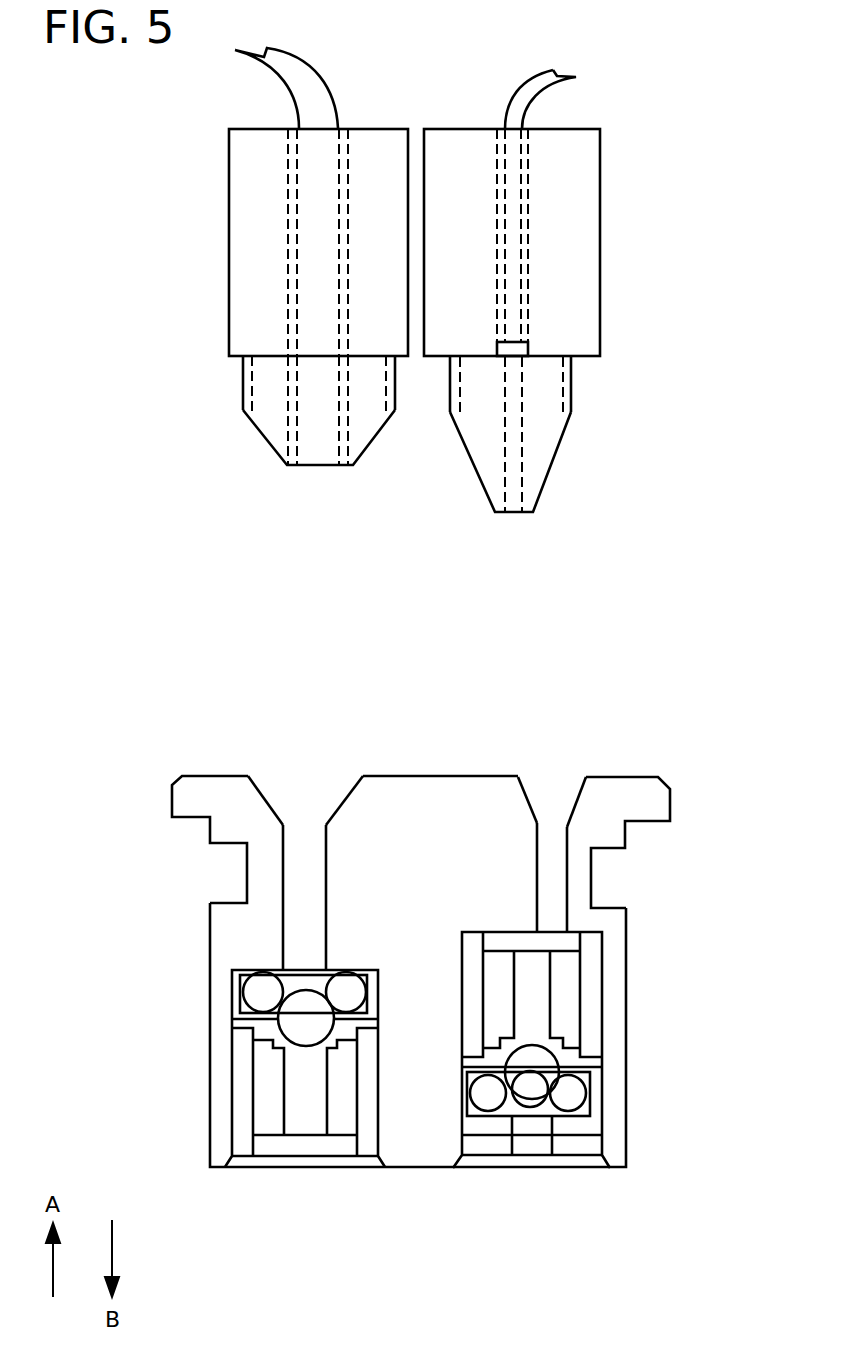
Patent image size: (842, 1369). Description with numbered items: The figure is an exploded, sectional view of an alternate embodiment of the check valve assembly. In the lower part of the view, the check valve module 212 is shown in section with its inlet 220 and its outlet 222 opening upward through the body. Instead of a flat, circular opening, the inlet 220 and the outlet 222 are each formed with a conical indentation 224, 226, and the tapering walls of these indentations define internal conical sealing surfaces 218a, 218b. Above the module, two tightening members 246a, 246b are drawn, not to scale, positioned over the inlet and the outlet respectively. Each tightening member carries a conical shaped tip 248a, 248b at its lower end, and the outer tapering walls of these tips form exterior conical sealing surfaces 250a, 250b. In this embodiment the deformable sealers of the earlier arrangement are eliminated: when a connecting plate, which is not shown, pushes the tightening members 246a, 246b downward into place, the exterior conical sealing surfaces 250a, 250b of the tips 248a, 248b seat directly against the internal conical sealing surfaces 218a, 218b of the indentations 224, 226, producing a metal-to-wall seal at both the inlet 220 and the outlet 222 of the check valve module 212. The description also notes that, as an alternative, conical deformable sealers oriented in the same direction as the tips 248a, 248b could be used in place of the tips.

The check valve module 212 is at (210, 1046).
The internal conical sealing surface 218a is at (267, 795).
The internal conical sealing surface 218b is at (572, 793).
The inlet 220 is at (280, 788).
The outlet 222 is at (557, 783).
The conical indentation 224 is at (316, 792).
The conical indentation 226 is at (545, 797).
The tightening member 246a is at (229, 175).
The tightening member 246b is at (600, 185).
The conical shaped tip 248a is at (258, 415).
The conical shaped tip 248b is at (545, 443).
The exterior conical sealing surface 250a is at (267, 437).
The exterior conical sealing surface 250b is at (552, 462).